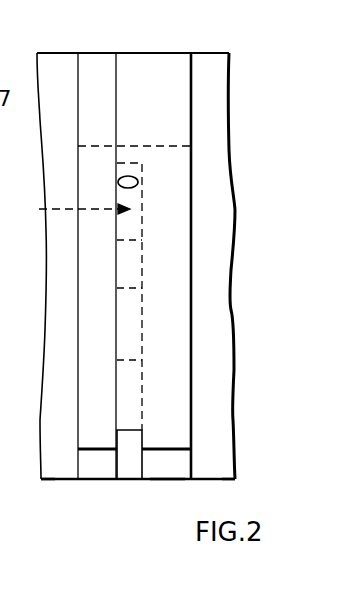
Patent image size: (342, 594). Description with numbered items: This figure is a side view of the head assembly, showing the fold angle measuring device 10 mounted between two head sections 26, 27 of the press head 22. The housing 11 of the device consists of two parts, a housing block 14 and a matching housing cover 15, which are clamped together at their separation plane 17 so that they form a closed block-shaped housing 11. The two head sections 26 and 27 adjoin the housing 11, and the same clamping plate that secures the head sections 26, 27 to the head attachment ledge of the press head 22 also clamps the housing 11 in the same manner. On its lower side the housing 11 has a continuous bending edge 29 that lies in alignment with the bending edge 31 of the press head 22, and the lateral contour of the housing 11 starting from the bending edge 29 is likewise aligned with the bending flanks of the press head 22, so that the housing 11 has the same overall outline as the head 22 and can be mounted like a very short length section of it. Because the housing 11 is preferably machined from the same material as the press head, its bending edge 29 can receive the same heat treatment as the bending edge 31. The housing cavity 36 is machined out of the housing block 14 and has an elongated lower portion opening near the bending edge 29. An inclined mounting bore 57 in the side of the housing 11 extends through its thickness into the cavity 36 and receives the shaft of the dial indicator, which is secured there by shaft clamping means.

The measuring device 10 is at (130, 503).
The housing 11 is at (165, 482).
The housing block 14 is at (154, 63).
The housing cover 15 is at (95, 70).
The separation plane 17 is at (117, 77).
The press head 22 is at (47, 504).
The head section 26 is at (57, 68).
The head section 27 is at (205, 65).
The bending edge 29 is at (104, 480).
The bending edge 31 is at (54, 480).
The housing cavity 36 is at (72, 209).
The mounting bore 57 is at (119, 180).